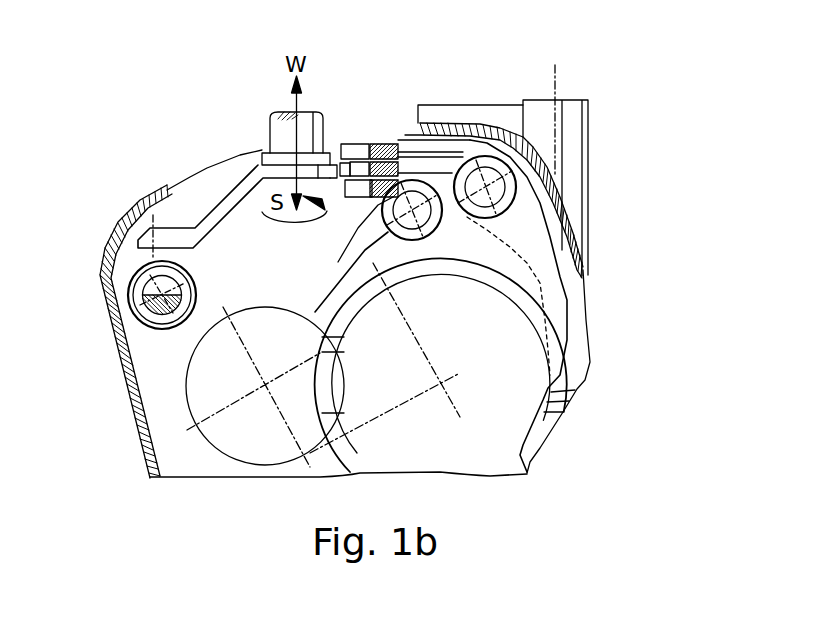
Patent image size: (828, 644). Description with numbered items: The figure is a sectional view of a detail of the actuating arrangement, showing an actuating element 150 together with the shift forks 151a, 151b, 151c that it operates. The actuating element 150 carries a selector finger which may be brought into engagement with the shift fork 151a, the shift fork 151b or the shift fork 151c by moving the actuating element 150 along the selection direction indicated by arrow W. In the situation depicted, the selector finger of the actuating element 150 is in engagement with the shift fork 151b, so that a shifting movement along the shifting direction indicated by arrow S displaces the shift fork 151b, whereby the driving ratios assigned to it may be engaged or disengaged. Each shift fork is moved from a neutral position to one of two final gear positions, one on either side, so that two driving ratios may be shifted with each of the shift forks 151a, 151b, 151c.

The actuating element 150 is at (252, 167).
The shift fork 151a is at (350, 148).
The shift fork 151b is at (431, 163).
The shift fork 151c is at (366, 199).